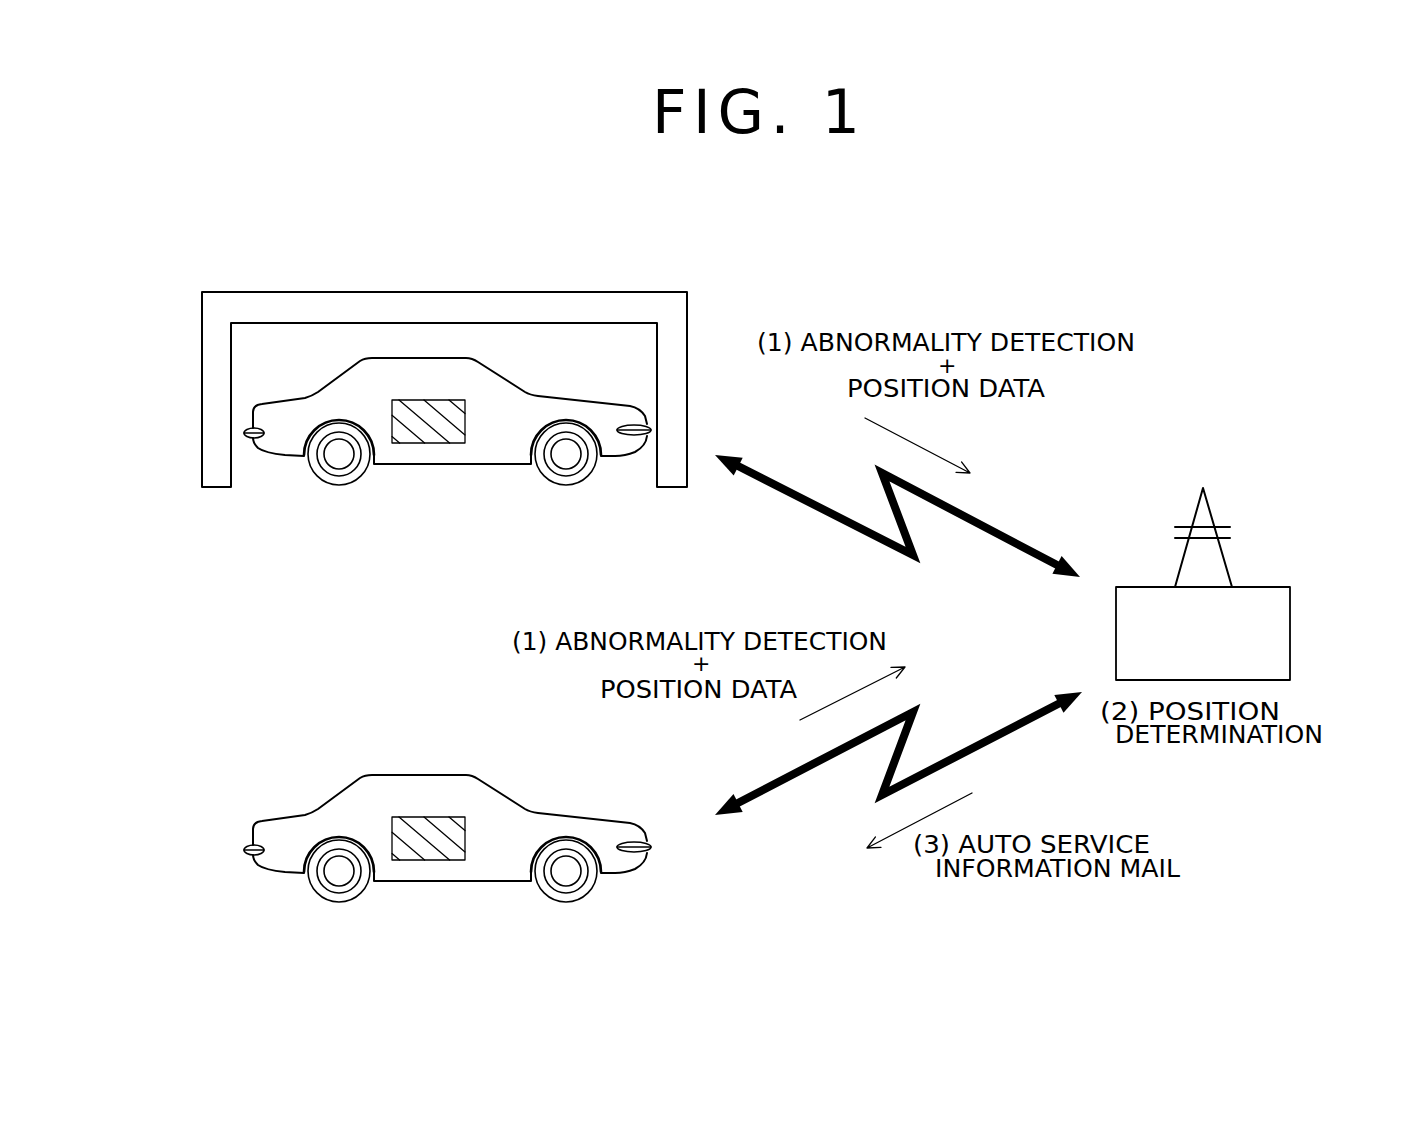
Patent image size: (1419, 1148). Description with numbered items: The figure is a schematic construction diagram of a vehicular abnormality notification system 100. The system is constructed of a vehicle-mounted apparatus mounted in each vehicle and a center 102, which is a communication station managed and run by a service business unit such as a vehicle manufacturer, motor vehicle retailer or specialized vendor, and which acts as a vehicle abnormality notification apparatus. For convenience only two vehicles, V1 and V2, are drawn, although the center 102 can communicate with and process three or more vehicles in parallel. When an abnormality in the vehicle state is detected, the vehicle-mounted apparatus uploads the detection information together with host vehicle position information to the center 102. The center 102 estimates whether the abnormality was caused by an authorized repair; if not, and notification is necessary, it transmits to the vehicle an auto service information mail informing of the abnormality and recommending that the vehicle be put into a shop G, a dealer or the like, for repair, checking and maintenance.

The shop for vehicle repair, checking and maintenance (dealer or the like) G is at (267, 292).
The vehicle V1 is at (330, 380).
The vehicle V2 is at (330, 797).
The vehicular abnormality notification system 100 is at (1220, 527).
The center 102 is at (1272, 587).